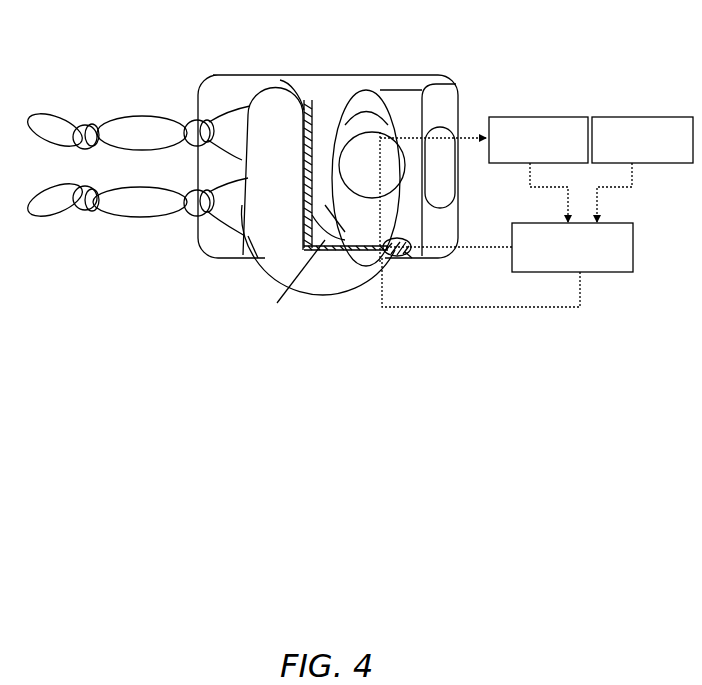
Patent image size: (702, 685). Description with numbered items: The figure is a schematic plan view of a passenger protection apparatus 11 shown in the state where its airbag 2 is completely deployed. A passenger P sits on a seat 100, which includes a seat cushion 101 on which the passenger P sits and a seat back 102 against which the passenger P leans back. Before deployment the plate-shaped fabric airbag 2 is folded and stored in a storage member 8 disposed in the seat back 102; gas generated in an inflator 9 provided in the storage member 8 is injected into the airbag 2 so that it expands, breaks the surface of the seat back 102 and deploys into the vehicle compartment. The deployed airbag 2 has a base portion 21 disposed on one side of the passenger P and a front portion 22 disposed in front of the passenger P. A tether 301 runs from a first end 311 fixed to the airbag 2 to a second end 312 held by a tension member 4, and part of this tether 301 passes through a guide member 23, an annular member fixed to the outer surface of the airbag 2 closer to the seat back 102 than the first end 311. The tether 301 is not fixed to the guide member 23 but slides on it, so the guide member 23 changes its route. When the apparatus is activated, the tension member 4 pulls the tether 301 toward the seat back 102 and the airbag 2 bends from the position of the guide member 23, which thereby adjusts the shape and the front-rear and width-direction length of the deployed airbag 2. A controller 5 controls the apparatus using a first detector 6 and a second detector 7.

The passenger protection apparatus 11 is at (183, 52).
The seat 100 is at (461, 87).
The seat cushion 101 is at (248, 75).
The seat back 102 is at (446, 80).
The airbag 2 is at (291, 84).
The first end 311 is at (313, 112).
The second end 312 is at (378, 244).
The guide member 23 is at (325, 226).
The passenger P is at (363, 85).
The tether 301 is at (343, 290).
The base portion 21 is at (318, 291).
The front portion 22 is at (238, 258).
The tension member 4 is at (397, 246).
The first detector 6 is at (418, 252).
The inflator 9 is at (403, 260).
The second detector 7 is at (561, 116).
The storage member 8 is at (658, 116).
The controller 5 is at (634, 247).